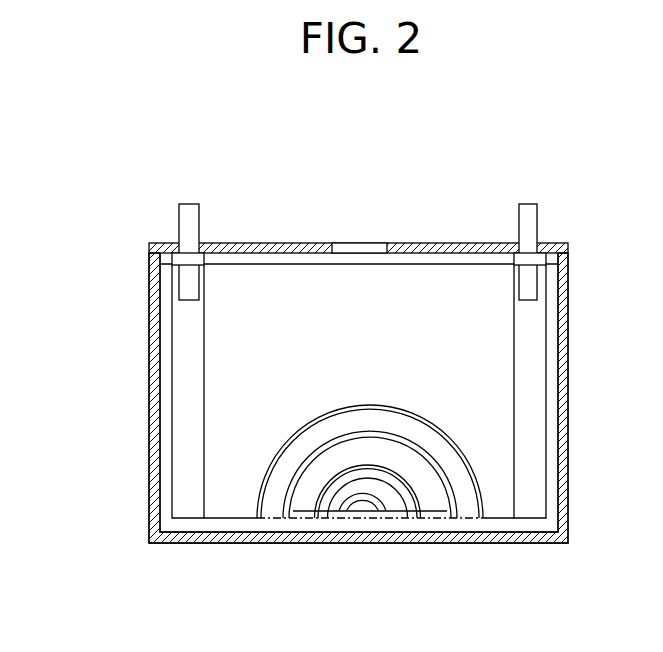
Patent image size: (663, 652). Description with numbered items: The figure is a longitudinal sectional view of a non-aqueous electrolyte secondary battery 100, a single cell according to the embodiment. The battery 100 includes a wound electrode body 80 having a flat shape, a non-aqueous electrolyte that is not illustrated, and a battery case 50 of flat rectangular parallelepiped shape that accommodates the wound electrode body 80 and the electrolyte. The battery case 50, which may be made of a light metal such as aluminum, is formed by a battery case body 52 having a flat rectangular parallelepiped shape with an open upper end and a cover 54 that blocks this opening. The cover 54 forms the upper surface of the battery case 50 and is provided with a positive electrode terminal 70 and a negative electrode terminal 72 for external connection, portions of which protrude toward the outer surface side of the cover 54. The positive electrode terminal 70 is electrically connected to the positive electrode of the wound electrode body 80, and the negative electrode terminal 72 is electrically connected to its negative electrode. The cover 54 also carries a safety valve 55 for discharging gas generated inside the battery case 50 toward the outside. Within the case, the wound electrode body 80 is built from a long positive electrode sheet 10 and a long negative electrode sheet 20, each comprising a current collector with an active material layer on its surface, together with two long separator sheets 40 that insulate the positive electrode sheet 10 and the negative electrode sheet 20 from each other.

The non-aqueous electrolyte secondary battery 100 is at (563, 150).
The positive electrode sheet 10 is at (273, 505).
The negative electrode sheet 20 is at (331, 503).
The separator sheet 40 is at (228, 503).
The battery case 50 is at (568, 391).
The battery case body 52 is at (562, 499).
The cover 54 is at (460, 250).
The safety valve 55 is at (352, 250).
The positive electrode terminal 70 is at (188, 210).
The negative electrode terminal 72 is at (526, 210).
The wound electrode body 80 is at (500, 522).